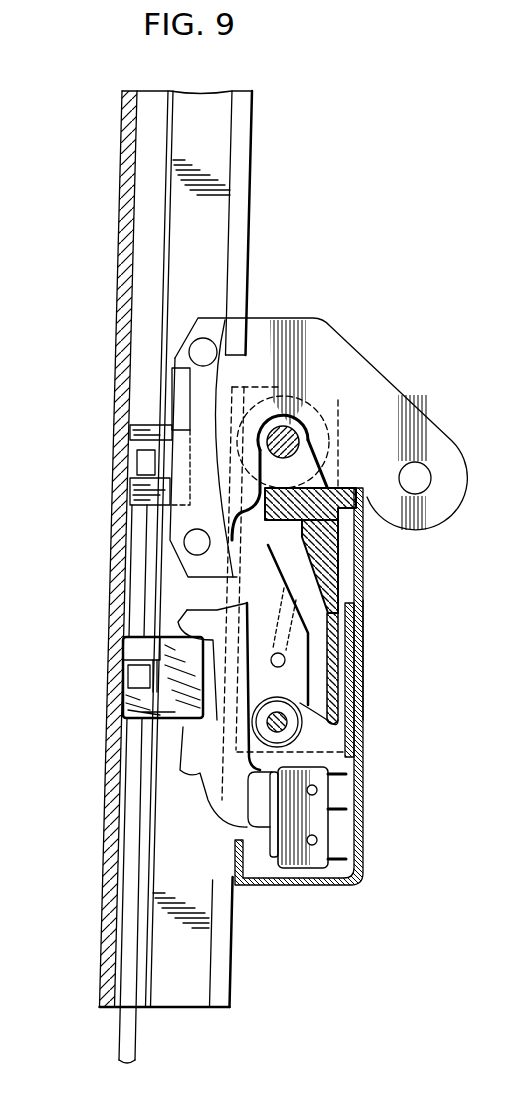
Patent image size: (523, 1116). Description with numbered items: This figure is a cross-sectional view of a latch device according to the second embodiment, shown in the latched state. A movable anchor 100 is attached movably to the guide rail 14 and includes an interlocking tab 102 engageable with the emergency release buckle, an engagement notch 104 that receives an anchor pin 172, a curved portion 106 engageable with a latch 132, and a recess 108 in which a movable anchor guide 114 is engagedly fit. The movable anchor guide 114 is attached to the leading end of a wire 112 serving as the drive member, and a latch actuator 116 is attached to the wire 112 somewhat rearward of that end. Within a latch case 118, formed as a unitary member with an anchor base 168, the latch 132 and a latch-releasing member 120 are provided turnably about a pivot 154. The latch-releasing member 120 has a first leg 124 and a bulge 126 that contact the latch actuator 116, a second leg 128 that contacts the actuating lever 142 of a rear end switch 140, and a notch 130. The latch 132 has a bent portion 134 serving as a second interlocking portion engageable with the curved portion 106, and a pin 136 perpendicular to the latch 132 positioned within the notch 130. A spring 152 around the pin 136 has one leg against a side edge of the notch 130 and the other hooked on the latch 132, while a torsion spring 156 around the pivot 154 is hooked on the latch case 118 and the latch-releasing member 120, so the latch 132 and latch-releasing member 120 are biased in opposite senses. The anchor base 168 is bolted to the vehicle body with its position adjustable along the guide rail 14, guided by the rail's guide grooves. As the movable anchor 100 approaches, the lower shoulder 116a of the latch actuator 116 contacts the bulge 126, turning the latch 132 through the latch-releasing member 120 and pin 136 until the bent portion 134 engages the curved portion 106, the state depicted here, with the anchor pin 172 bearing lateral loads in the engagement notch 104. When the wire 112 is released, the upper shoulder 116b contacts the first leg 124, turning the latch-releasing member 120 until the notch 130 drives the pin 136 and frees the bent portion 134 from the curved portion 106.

The guide rail 14 is at (215, 215).
The movable anchor 100 is at (324, 600).
The interlocking tab 102 is at (430, 443).
The engagement notch 104 is at (277, 410).
The curved portion 106 is at (255, 568).
The recess 108 is at (175, 372).
The wire 112 is at (127, 898).
The movable anchor guide 114 is at (147, 435).
The latch actuator 116 is at (187, 690).
The lower shoulder 116a is at (183, 710).
The upper shoulder 116b is at (190, 652).
The latch case 118 is at (367, 860).
The latch-releasing member 120 is at (178, 595).
The first leg 124 is at (190, 612).
The bulge 126 is at (200, 775).
The second leg 128 is at (262, 830).
The notch 130 is at (290, 643).
The latch 132 is at (307, 581).
The bent portion 134 is at (360, 545).
The pin 136 is at (338, 676).
The rear end switch 140 is at (320, 817).
The actuating lever 142 is at (272, 783).
The spring 152 is at (356, 613).
The pivot 154 is at (345, 752).
The torsion spring 156 is at (285, 722).
The anchor base 168 is at (368, 663).
The anchor pin 172 is at (305, 435).